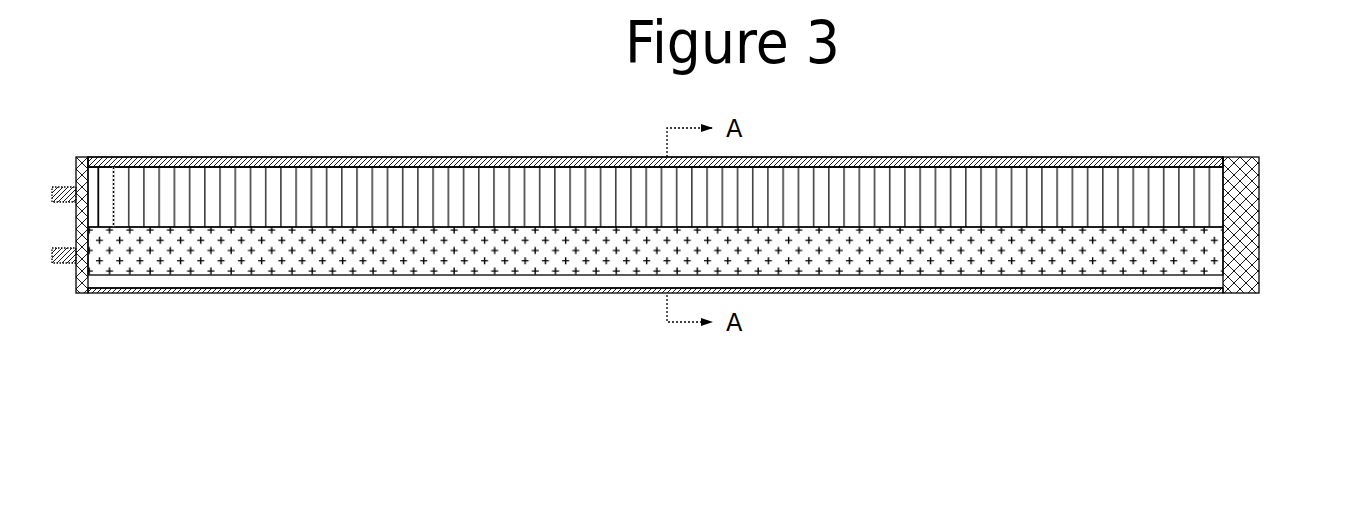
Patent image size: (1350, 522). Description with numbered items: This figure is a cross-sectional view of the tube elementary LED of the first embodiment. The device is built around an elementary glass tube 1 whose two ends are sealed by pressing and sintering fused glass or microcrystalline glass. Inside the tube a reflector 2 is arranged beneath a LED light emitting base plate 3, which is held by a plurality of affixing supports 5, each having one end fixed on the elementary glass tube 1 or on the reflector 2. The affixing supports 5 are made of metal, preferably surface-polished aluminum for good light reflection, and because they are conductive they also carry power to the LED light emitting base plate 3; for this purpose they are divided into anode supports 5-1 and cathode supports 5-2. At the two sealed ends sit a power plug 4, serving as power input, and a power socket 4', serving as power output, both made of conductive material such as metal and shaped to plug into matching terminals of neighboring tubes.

The elementary glass tube 1 is at (308, 157).
The reflector 2 is at (808, 165).
The LED light emitting base plate 3 is at (920, 270).
The power plug 4 is at (83, 207).
The power socket 4' is at (1280, 235).
The affixing support 5 is at (980, 190).
The anode support 5-1 is at (100, 185).
The cathode support 5-2 is at (118, 195).